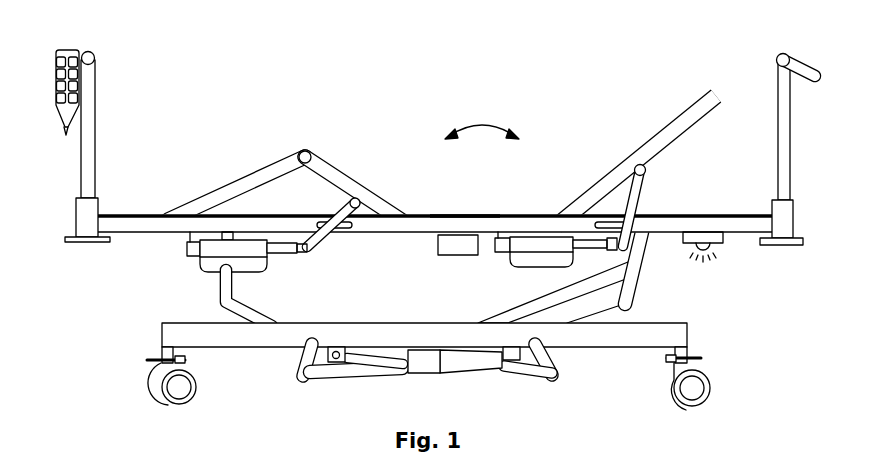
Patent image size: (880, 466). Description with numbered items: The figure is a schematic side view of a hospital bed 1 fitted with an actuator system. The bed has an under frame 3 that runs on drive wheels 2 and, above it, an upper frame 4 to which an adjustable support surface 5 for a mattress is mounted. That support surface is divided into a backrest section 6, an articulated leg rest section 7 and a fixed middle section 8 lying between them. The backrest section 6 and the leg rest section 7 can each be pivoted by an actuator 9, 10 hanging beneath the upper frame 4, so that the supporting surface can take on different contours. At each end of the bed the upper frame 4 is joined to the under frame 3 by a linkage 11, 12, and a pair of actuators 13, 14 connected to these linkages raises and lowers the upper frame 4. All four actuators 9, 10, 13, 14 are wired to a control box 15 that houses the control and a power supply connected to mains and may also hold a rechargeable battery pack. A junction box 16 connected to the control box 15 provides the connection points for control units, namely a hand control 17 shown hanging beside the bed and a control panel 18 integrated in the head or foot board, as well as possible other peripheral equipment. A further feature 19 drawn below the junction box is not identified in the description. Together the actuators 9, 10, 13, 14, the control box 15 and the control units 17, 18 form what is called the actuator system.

The hospital bed 1 is at (290, 49).
The drive wheels 2 is at (162, 397).
The under frame 3 is at (623, 340).
The upper frame 4 is at (673, 222).
The adjustable support surface 5 is at (482, 122).
The backrest section 6 is at (626, 155).
The articulated leg rest section 7 is at (310, 153).
The fixed middle section 8 is at (459, 222).
The actuator 9 is at (548, 262).
The actuator 10 is at (266, 270).
The linkage 11 is at (636, 302).
The linkage 12 is at (221, 292).
The actuator 13 is at (445, 376).
The actuator 14 is at (361, 358).
The control box 15 is at (464, 254).
The junction box 16 is at (721, 245).
The hand control 17 is at (67, 47).
The control panel 18 is at (806, 60).
The light beam 19 is at (701, 262).